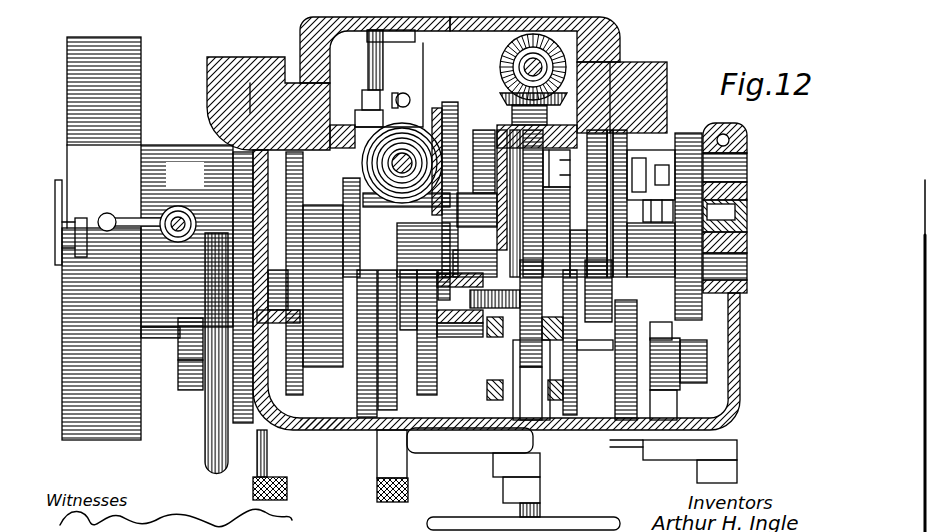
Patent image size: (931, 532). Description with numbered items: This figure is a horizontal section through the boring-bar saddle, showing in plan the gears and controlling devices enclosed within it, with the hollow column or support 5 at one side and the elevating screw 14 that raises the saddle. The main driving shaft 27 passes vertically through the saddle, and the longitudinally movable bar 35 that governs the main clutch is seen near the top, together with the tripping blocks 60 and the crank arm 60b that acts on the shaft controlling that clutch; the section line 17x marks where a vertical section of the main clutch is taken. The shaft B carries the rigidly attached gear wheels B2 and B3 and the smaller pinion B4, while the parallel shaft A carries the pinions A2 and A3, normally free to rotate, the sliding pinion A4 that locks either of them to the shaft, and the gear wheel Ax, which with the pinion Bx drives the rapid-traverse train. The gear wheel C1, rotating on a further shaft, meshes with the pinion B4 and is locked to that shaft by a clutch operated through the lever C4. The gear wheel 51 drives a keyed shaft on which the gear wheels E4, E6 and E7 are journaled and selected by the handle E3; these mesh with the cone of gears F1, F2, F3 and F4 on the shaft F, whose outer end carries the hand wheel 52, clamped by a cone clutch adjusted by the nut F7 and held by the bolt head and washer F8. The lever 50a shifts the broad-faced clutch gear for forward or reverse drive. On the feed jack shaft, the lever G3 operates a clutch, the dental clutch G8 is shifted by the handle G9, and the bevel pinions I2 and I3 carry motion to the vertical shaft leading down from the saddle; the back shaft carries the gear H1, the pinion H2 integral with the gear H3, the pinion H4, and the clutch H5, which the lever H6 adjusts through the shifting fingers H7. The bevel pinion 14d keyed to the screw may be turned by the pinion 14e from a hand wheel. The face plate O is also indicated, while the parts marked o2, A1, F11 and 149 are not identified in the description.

The face plate O is at (98, 238).
The wheel handle o2 is at (179, 206).
The hand wheel 52 is at (212, 255).
The bolt head and washer F8 is at (178, 350).
The nut F7 is at (184, 390).
The hollow column 5 is at (305, 35).
The elevating screw 14 is at (600, 58).
The sliding pinion A4 is at (652, 96).
The main driving shaft 27 is at (360, 130).
The pinion A3 is at (688, 135).
The gear wheel B3 is at (725, 216).
The shaft B is at (520, 215).
The shaft F is at (317, 273).
The gear wheel 51 is at (327, 310).
The gear wheel E4 is at (388, 275).
The operating handle E3 is at (363, 227).
The gear F2 is at (380, 385).
The gear F3 is at (395, 385).
The gear F4 is at (408, 330).
The gear wheel E6 is at (437, 355).
The section line 17x is at (400, 212).
The gear wheel Ax is at (440, 125).
The gear A1 is at (447, 108).
The pinion A2 is at (512, 165).
The pinion Bx is at (484, 228).
The gear wheel C1 is at (578, 242).
The pinion B4 is at (624, 204).
The shaft A is at (651, 186).
The gear wheel B2 is at (648, 250).
The gear F1 is at (483, 299).
The gear wheel E7 is at (455, 340).
The dental clutch G8 is at (525, 368).
The bevel pinion I3 is at (531, 340).
The bevel pinion I2 is at (495, 400).
The pinion H2 is at (581, 342).
The shifting fingers H7 is at (684, 408).
The pinion H4 is at (690, 370).
The clutch H5 is at (676, 340).
The tripping blocks 60 is at (410, 40).
The crank arm 60b is at (368, 62).
The longitudinally movable bar 35 is at (410, 97).
The bevel pinion 14d is at (515, 52).
The bevel pinion 14e is at (512, 112).
The lever G3 is at (296, 500).
The lever 50a is at (345, 440).
The post F11 is at (372, 455).
The handle G9 is at (447, 455).
The gear H1 is at (548, 440).
The gear H3 is at (556, 462).
The base plate 149 is at (602, 517).
The lever H6 is at (737, 465).
The operating lever C4 is at (700, 474).